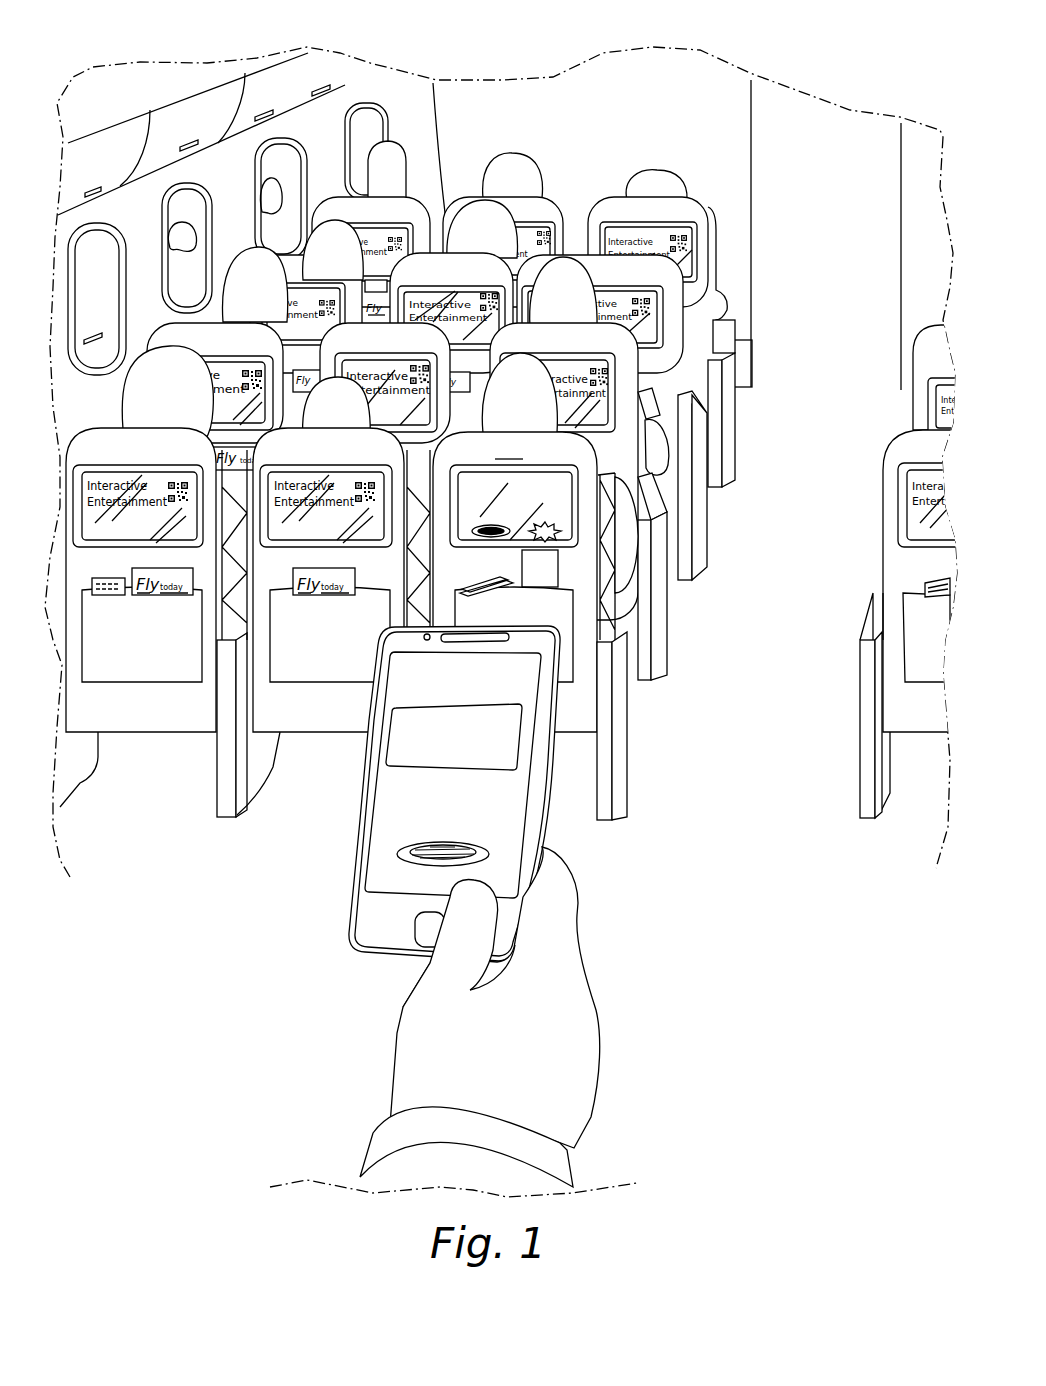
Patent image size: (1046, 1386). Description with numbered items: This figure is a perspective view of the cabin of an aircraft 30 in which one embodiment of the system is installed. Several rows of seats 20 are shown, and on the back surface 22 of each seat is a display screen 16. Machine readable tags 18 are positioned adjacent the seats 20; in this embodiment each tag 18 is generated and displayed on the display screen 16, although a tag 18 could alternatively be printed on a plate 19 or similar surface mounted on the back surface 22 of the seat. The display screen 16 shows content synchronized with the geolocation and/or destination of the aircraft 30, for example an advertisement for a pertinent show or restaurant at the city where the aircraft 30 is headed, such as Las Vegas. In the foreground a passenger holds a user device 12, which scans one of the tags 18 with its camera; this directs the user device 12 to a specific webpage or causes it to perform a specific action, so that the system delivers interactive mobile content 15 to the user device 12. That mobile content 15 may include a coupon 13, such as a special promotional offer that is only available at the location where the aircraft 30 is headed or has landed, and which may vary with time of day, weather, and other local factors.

The aircraft 30 is at (218, 173).
The back surface 22 is at (604, 506).
The seats 20 is at (573, 450).
The machine readable tags 18 is at (603, 380).
The display screen 16 is at (557, 497).
The plate 19 is at (558, 553).
The user device 12 is at (543, 810).
The coupon 13 is at (497, 753).
The interactive mobile content 15 is at (385, 823).